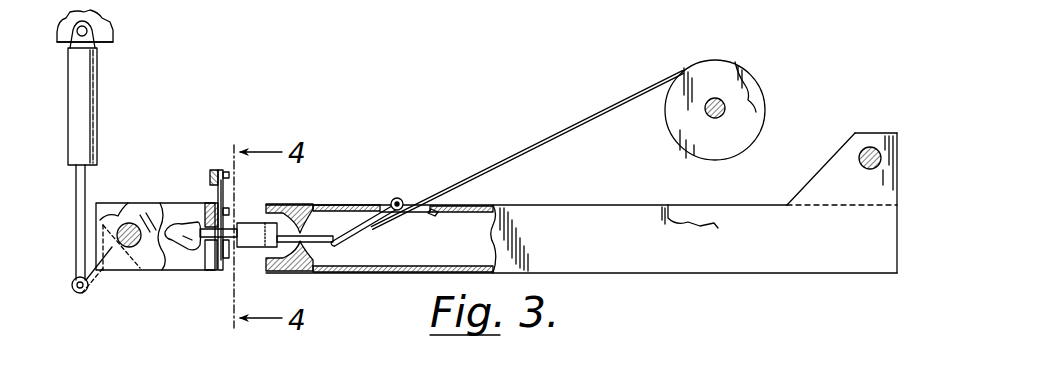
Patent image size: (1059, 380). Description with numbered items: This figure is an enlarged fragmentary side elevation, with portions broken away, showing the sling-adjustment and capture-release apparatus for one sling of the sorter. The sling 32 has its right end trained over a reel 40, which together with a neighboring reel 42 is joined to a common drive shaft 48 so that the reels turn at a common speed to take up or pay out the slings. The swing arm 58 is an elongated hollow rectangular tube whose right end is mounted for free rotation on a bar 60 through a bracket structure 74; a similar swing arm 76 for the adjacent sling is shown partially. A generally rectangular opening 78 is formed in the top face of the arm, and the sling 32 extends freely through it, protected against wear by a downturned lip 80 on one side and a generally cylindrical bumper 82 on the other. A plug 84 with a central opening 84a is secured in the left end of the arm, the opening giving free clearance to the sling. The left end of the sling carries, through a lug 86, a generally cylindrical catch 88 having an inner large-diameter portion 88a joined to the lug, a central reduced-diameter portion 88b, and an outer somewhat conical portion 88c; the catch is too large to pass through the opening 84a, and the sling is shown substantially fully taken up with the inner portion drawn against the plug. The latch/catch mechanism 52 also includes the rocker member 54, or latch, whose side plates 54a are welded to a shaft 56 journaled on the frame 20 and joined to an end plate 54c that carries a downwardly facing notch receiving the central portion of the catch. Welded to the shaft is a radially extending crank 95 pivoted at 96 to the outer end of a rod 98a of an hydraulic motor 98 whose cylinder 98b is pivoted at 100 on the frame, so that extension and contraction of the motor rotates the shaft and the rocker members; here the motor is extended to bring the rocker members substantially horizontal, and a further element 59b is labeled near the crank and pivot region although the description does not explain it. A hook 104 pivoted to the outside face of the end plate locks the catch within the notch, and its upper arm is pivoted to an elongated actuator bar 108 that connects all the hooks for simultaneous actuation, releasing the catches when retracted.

The frame 20 is at (104, 36).
The sling 32 is at (549, 120).
The reel 40 is at (705, 78).
The reel 42 is at (752, 88).
The drive shaft 48 is at (707, 113).
The latch/catch mechanism 52 is at (190, 158).
The rocker member 54 is at (157, 256).
The side plates 54a is at (180, 262).
The end plate 54c is at (194, 200).
The shaft 56 is at (136, 225).
The swing arm 58 is at (695, 277).
The link 59b is at (103, 275).
The bar 60 is at (870, 147).
The bracket structure 74 is at (828, 165).
The swing arm 76 is at (680, 215).
The opening 78 is at (420, 200).
The downturned lip 80 is at (433, 218).
The bumper 82 is at (399, 198).
The plug 84 is at (581, 236).
The central opening 84a is at (328, 262).
The lug 86 is at (332, 238).
The catch 88 is at (250, 222).
The inner large-diameter portion 88a is at (263, 247).
The central reduced-diameter portion 88b is at (205, 262).
The outer conical portion 88c is at (210, 178).
The crank 95 is at (92, 300).
The pivot 96 is at (72, 288).
The hydraulic motor 98 is at (133, 150).
The rod 98a is at (78, 222).
The cylinder 98b is at (88, 110).
The pivot 100 is at (96, 27).
The hook 104 is at (240, 168).
The actuator bar 108 is at (226, 168).